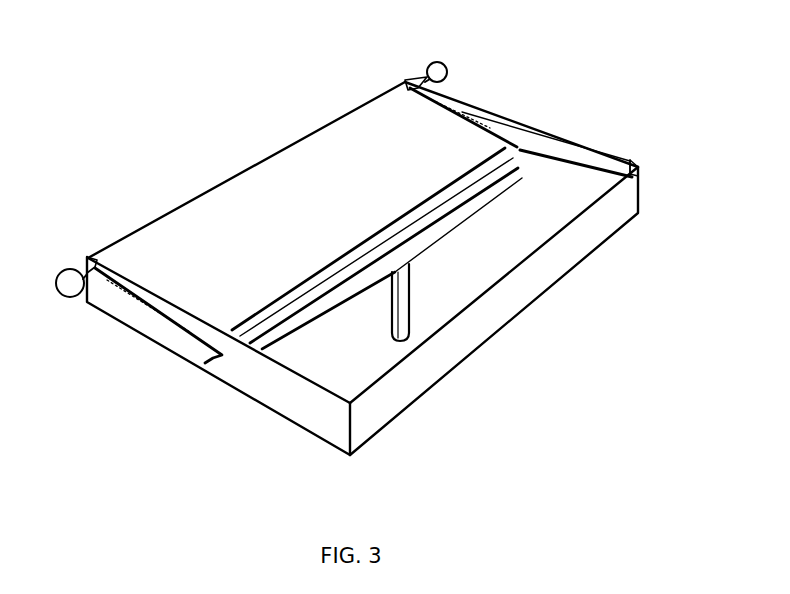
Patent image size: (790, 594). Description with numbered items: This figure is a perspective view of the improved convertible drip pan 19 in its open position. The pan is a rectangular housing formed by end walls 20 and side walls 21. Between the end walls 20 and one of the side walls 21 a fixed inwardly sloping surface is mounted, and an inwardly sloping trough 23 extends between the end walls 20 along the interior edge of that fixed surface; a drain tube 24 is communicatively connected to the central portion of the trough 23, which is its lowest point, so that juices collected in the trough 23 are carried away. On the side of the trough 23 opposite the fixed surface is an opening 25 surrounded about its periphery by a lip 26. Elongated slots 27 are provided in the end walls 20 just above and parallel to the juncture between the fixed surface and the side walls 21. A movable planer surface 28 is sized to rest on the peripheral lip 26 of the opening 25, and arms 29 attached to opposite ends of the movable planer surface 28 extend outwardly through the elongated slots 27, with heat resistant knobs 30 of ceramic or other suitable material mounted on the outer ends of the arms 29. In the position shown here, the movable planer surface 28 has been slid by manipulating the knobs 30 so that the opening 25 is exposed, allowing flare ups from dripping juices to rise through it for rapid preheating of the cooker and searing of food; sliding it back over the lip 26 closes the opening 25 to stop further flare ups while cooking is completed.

The convertible drip pan 19 is at (590, 111).
The end walls 20 is at (528, 128).
The side walls 21 is at (180, 203).
The trough 23 is at (412, 254).
The drain tube 24 is at (411, 308).
The opening 25 is at (627, 166).
The lip 26 is at (528, 146).
The elongated slots 27 is at (466, 118).
The movable planer surface 28 is at (254, 207).
The arms 29 is at (418, 76).
The knobs 30 is at (458, 68).